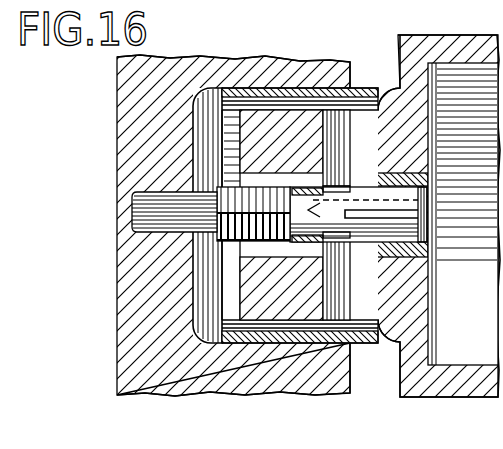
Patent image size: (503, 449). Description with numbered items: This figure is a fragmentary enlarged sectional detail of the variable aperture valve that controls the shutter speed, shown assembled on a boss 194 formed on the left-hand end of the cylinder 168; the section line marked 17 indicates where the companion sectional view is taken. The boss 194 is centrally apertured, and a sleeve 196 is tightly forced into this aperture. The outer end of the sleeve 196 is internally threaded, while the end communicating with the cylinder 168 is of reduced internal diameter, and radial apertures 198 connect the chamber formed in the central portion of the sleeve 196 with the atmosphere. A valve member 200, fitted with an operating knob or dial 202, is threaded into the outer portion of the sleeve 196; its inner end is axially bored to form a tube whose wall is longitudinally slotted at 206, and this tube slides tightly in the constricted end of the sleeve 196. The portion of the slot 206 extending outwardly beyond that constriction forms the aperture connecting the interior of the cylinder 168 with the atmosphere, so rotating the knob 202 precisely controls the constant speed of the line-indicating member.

The cylinder 168 is at (482, 328).
The boss 194 is at (274, 306).
The sleeve 196 is at (415, 251).
The radial apertures 198 is at (340, 118).
The valve member 200 is at (150, 228).
The operating knob or dial 202 is at (137, 290).
The slot 206 is at (423, 212).
The section line 17- 17 is at (315, 22).